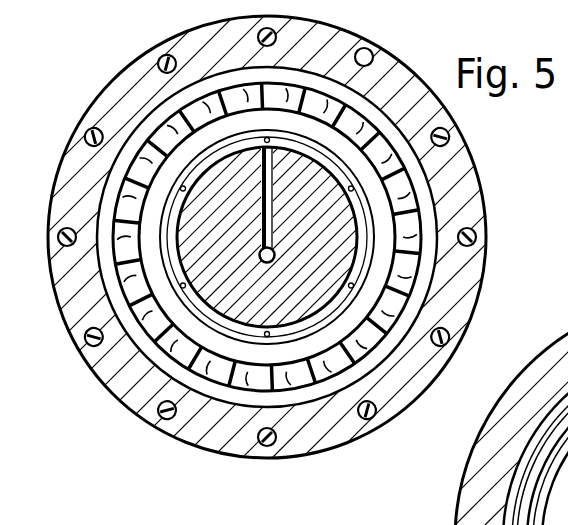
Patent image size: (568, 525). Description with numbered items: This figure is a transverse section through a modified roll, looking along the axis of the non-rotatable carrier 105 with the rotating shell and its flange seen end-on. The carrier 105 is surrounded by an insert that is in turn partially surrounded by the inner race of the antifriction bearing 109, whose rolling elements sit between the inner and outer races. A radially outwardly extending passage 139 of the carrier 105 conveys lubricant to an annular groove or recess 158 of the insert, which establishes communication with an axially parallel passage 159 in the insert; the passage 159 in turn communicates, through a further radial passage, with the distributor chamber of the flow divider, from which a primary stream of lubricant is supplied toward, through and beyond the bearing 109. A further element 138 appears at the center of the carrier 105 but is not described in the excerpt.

The non-rotatable carrier 105 is at (223, 307).
The antifriction bearing 109 is at (348, 360).
The center pin 138 is at (265, 262).
The radially outwardly extending passage 139 is at (274, 205).
The retaining ring 158 is at (198, 172).
The axially parallel passage 159 is at (355, 286).